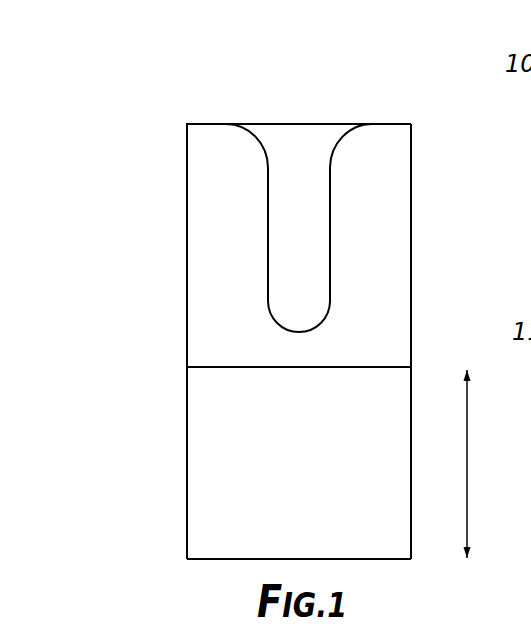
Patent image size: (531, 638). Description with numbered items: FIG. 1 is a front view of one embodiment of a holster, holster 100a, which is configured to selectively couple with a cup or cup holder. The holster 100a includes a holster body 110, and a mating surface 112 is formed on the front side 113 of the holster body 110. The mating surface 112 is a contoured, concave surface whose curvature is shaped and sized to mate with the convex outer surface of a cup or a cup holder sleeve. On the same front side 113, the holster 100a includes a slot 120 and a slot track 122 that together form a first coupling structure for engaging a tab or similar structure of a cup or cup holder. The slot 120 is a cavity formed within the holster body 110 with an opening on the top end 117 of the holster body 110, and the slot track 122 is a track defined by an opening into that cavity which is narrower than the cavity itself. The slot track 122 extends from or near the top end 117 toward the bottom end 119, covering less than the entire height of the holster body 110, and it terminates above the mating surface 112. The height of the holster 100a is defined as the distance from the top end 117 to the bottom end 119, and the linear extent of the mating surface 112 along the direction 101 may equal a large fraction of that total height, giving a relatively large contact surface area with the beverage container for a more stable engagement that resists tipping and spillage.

The holster 100a is at (158, 94).
The direction 101 is at (467, 438).
The holster body 110 is at (187, 307).
The mating surface 112 is at (245, 383).
The front side 113 is at (362, 242).
The top end 117 is at (378, 124).
The bottom end 119 is at (393, 560).
The slot 120 is at (268, 138).
The slot track 122 is at (283, 252).